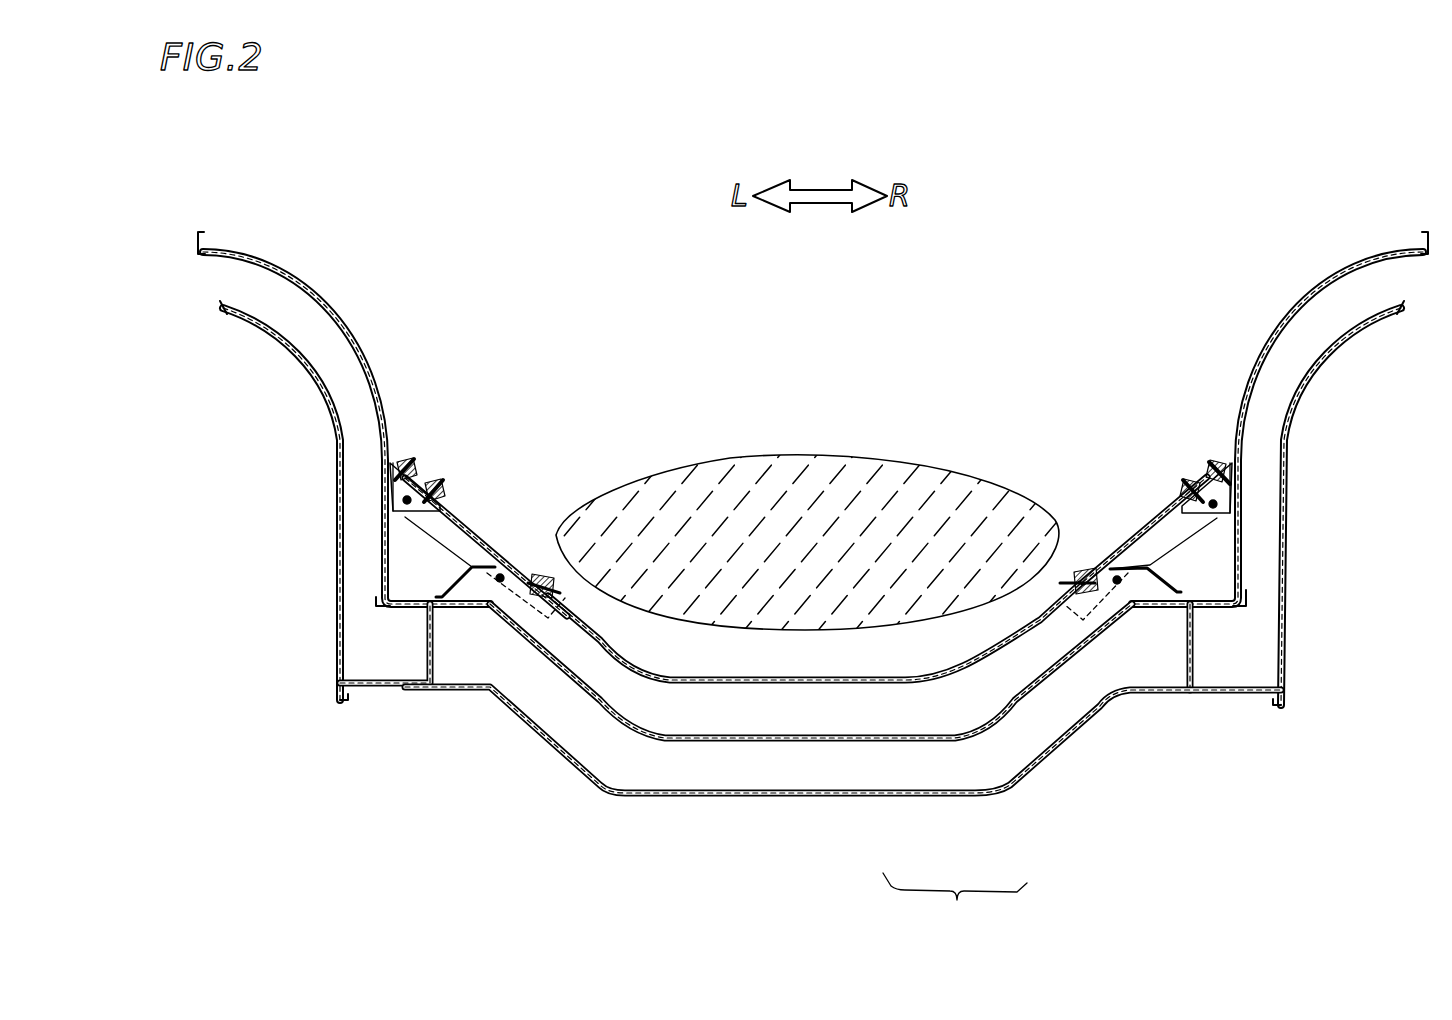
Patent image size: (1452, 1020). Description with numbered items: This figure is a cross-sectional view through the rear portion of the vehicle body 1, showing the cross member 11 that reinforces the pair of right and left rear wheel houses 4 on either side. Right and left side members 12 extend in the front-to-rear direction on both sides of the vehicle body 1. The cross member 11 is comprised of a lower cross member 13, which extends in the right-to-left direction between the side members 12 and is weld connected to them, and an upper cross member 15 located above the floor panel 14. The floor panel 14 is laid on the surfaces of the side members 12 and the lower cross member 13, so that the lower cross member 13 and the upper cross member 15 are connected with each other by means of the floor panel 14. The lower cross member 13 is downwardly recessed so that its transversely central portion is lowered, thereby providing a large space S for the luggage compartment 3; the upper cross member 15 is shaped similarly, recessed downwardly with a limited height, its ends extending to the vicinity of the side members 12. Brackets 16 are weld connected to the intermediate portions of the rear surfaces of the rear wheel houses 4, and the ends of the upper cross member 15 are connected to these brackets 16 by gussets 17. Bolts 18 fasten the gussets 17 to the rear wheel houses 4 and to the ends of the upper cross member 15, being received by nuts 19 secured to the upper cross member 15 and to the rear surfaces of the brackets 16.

The vehicle body 1 is at (437, 182).
The luggage compartment 3 is at (632, 292).
The rear wheel house 4 is at (363, 353).
The cross member 11 is at (955, 905).
The side member 12 is at (390, 690).
The lower cross member 13 is at (922, 774).
The floor panel 14 is at (860, 744).
The upper cross member 15 is at (966, 714).
The bracket 16 is at (400, 525).
The gusset 17 is at (470, 517).
The bolt 18 is at (437, 484).
The nut 19 is at (403, 502).
The space S is at (855, 460).